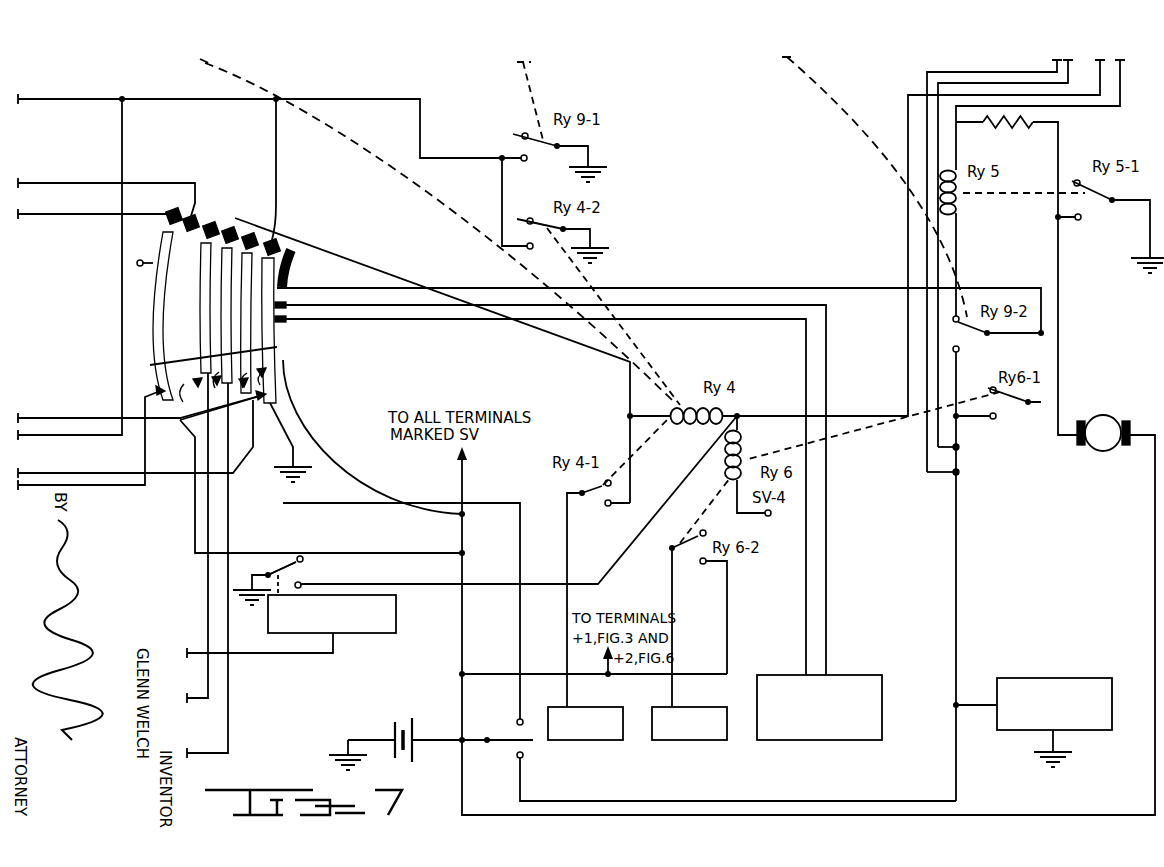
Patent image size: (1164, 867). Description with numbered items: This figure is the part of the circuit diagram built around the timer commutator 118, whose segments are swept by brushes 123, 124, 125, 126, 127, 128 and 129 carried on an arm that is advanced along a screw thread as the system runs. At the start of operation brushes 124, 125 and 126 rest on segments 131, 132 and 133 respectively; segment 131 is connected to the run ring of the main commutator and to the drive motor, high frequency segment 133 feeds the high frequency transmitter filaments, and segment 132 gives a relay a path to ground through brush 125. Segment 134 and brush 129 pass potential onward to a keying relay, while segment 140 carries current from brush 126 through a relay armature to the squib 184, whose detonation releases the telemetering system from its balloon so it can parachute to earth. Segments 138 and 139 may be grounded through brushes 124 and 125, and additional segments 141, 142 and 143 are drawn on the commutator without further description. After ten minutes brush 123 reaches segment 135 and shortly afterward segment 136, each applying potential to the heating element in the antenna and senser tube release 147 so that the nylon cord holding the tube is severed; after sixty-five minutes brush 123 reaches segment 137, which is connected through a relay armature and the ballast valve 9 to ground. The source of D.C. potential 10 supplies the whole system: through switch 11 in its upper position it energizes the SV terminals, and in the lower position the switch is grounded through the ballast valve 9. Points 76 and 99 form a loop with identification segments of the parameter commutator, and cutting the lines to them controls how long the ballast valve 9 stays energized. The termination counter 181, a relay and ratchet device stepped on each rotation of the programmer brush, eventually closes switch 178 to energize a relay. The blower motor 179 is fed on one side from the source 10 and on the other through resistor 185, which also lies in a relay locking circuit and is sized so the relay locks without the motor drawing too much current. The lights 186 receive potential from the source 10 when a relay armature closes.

The contact 143 is at (176, 211).
The contact 142 is at (193, 218).
The contact 141 is at (219, 226).
The segment 140 is at (232, 228).
The segment 139 is at (252, 235).
The segment 138 is at (277, 241).
The segment 137 is at (294, 279).
The segment 136 is at (287, 304).
The segment 135 is at (287, 320).
The segment 134 is at (165, 330).
The high frequency segment 133 is at (212, 298).
The segment 132 is at (233, 288).
The segment 131 is at (257, 280).
The timer commutator 118 is at (314, 358).
The brush 123 is at (292, 357).
The brush 124 is at (264, 372).
The brush 125 is at (248, 395).
The brush 126 is at (216, 372).
The brush 127 is at (203, 380).
The brush 128 is at (212, 414).
The brush 129 is at (160, 389).
The switch 178 is at (269, 570).
The termination counter 181 is at (397, 613).
The squib 184 is at (606, 697).
The lights 186 is at (702, 697).
The antenna and senser tube release 147 is at (856, 661).
The ballast valve 9 is at (1097, 678).
The source of D.C. potential 10 is at (403, 718).
The switch 11 is at (496, 736).
The resistor 185 is at (1010, 128).
The blower motor 179 is at (1105, 415).
The point 76 is at (959, 447).
The point 99 is at (959, 472).